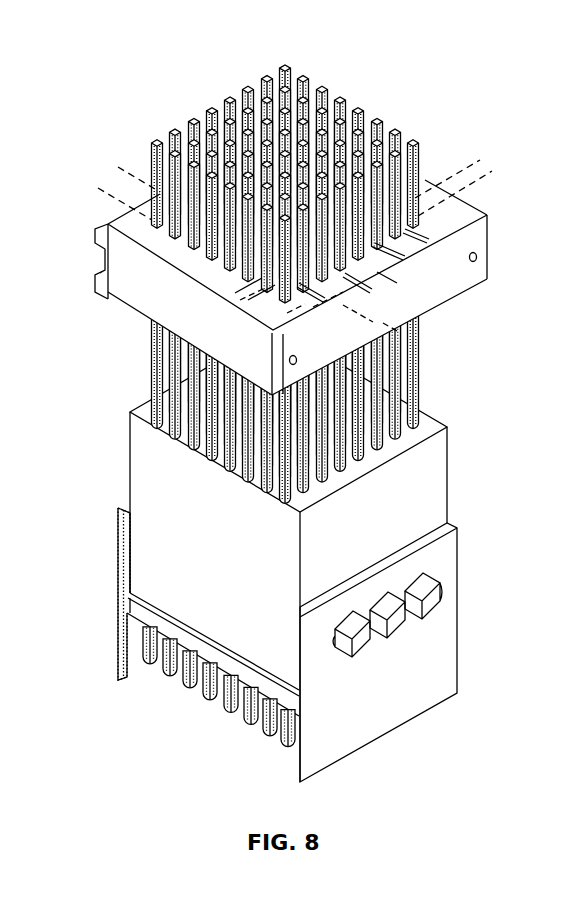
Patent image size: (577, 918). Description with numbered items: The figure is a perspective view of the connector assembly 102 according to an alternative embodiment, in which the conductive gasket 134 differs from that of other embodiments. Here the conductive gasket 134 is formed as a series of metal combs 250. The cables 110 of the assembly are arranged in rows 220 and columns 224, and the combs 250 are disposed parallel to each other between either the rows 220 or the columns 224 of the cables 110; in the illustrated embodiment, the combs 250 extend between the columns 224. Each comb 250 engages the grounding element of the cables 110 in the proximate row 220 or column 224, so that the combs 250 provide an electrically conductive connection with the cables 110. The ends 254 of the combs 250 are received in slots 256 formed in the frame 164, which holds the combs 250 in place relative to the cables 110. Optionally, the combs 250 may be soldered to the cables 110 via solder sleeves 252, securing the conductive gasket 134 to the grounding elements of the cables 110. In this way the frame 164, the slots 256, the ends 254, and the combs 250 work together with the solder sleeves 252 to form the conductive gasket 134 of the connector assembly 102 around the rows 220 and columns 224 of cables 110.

The connector assembly 102 is at (396, 77).
The cables 110 is at (152, 167).
The conductive gasket 134 is at (235, 335).
The frame 164 is at (123, 298).
The rows 220 is at (470, 164).
The columns 224 is at (122, 166).
The combs 250 is at (260, 256).
The solder sleeves 252 is at (255, 240).
The ends 254 is at (222, 306).
The slots 256 is at (126, 215).